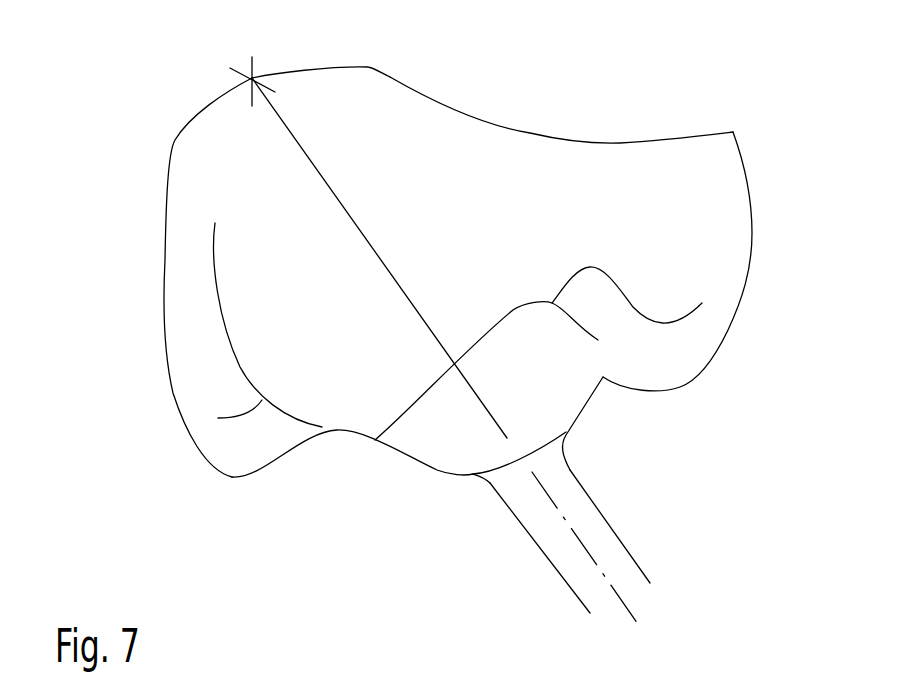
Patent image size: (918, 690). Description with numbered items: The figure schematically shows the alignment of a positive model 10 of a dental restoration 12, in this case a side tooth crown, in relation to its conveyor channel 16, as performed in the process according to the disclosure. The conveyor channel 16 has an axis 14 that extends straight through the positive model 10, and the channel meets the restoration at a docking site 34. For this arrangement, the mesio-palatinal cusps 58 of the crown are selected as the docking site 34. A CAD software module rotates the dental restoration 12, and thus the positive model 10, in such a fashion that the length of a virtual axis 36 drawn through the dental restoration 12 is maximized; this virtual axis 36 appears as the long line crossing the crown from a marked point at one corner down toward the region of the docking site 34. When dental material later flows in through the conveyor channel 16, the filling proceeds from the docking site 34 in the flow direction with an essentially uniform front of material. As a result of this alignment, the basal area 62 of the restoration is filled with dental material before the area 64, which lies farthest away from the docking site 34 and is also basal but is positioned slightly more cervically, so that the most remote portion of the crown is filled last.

The positive model 10 is at (463, 313).
The dental restoration 12 is at (664, 162).
The axis 14 is at (590, 555).
The conveyor channel 16 is at (620, 565).
The docking site 34 is at (483, 448).
The virtual axis 36 is at (303, 120).
The mesio-palatinal cusps 58 is at (545, 432).
The basal area 62 is at (723, 152).
The area 64 is at (207, 75).